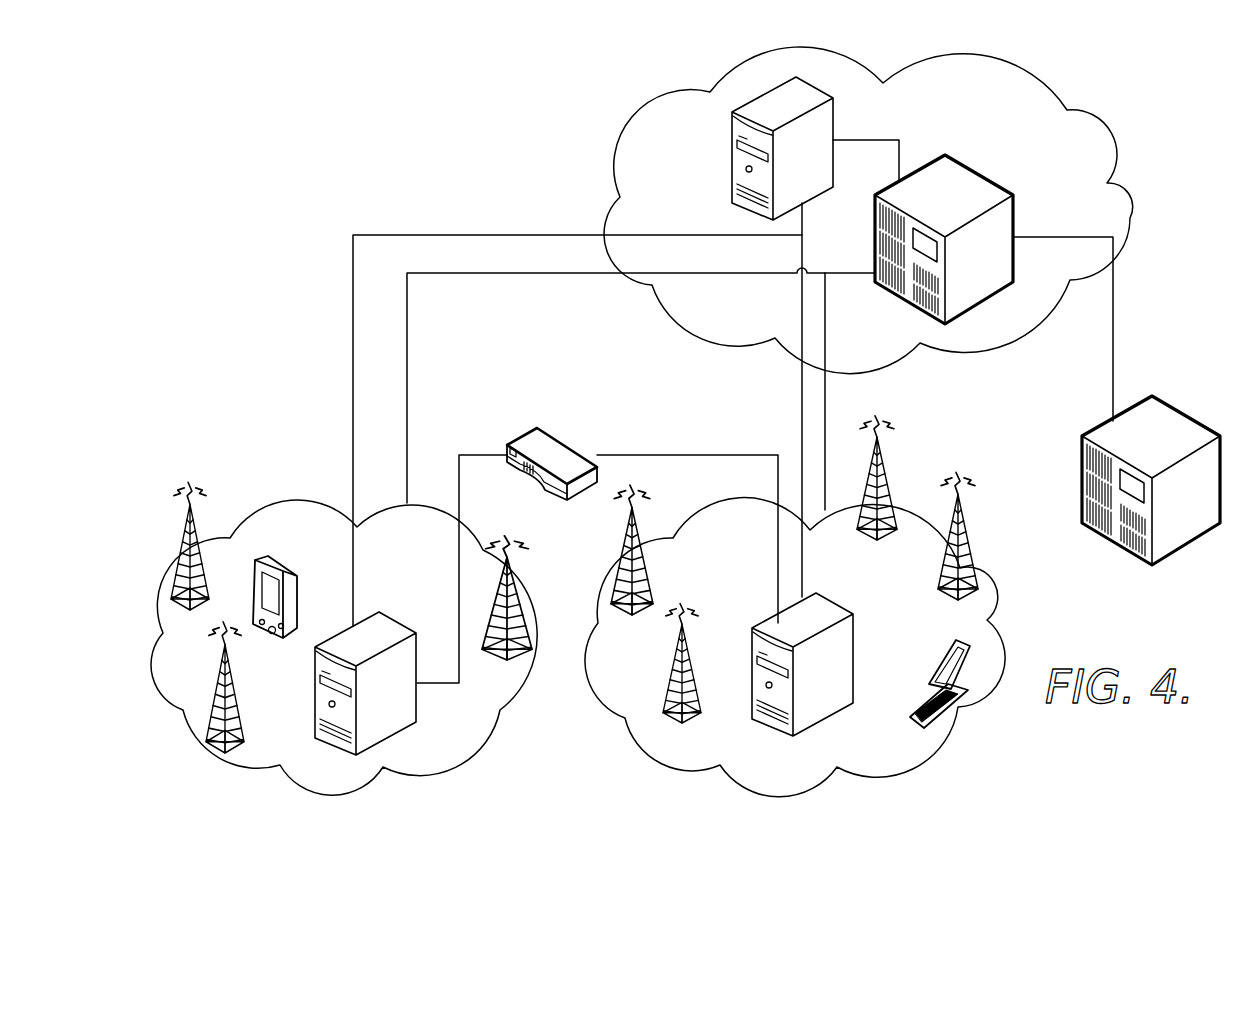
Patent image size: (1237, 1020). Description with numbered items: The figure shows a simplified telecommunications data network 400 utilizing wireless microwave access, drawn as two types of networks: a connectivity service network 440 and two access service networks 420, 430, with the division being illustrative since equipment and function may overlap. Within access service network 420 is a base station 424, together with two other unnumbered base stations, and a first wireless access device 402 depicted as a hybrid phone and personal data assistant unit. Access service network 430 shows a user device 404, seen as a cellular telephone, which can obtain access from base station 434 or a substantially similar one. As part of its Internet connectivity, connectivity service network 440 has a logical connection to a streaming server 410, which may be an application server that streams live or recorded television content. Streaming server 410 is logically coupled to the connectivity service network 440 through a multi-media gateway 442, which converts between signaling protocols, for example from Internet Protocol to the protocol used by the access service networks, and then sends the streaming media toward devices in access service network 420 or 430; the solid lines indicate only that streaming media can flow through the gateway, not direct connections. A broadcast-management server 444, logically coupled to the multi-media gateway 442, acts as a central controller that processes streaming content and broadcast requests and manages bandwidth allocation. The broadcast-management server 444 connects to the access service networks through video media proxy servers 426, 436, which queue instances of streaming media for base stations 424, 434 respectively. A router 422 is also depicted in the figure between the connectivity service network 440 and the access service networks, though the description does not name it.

The telecommunications data network 400 is at (239, 172).
The first wireless access device 402 is at (283, 563).
The user device 404 is at (952, 642).
The streaming server 410 is at (1082, 470).
The access service network 420 is at (285, 495).
The router 422 is at (563, 440).
The base station 424 is at (212, 695).
The video media proxy server 426 is at (315, 697).
The access service network 430 is at (957, 737).
The base station 434 is at (670, 677).
The video media proxy server 436 is at (853, 660).
The connectivity service network 440 is at (1130, 222).
The multi-media gateway 442 is at (978, 170).
The broadcast-management server 444 is at (835, 112).